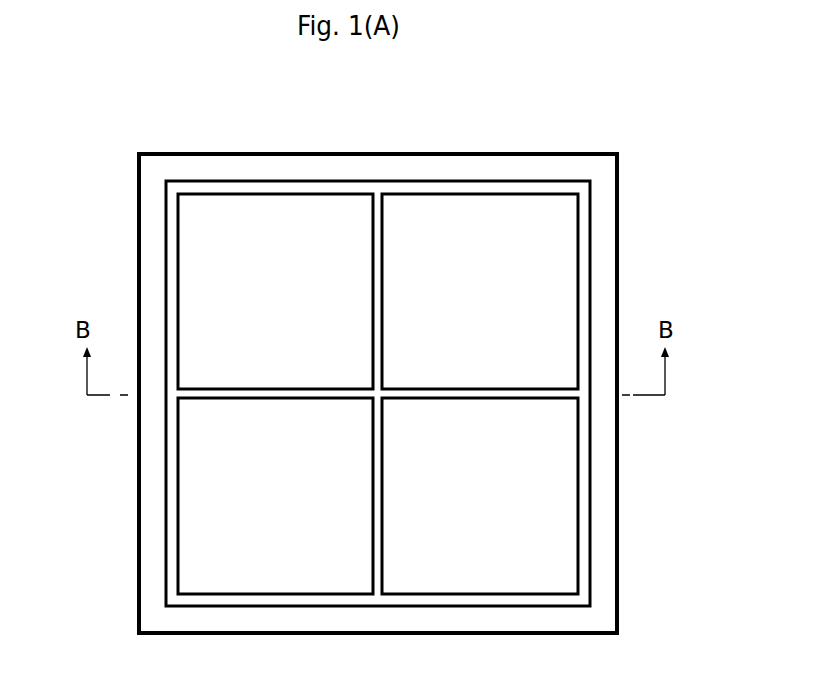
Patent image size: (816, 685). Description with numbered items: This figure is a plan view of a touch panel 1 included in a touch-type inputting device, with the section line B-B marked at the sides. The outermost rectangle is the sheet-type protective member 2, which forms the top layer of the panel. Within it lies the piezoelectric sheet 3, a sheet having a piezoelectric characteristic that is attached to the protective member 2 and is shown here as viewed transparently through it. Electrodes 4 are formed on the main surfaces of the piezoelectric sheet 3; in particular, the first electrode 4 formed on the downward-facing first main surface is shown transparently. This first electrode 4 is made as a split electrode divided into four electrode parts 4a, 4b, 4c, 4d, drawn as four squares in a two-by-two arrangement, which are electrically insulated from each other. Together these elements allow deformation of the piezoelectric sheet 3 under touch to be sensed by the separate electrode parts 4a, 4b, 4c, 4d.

The touch panel 1 is at (52, 95).
The protective member 2 is at (480, 167).
The piezoelectric sheet 3 is at (375, 190).
The electrode 4 is at (237, 186).
The electrode part 4a is at (557, 275).
The electrode part 4b is at (200, 255).
The electrode part 4c is at (198, 495).
The electrode part 4d is at (557, 502).